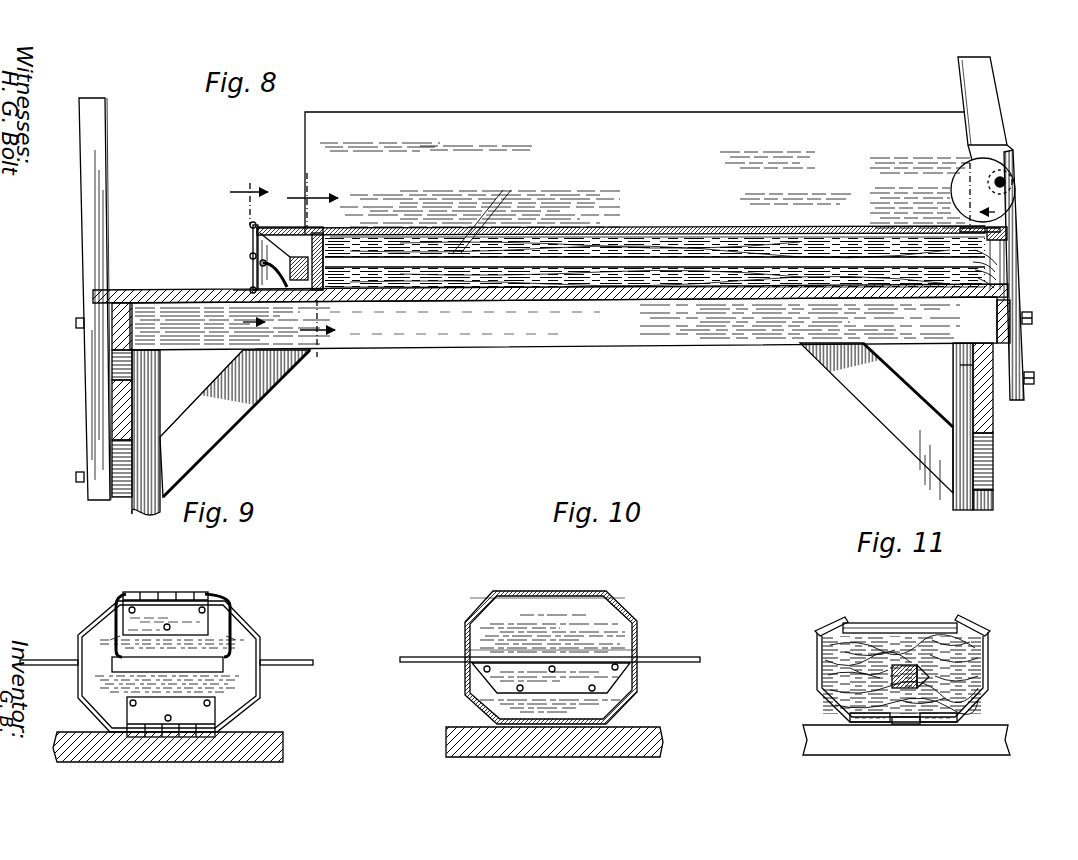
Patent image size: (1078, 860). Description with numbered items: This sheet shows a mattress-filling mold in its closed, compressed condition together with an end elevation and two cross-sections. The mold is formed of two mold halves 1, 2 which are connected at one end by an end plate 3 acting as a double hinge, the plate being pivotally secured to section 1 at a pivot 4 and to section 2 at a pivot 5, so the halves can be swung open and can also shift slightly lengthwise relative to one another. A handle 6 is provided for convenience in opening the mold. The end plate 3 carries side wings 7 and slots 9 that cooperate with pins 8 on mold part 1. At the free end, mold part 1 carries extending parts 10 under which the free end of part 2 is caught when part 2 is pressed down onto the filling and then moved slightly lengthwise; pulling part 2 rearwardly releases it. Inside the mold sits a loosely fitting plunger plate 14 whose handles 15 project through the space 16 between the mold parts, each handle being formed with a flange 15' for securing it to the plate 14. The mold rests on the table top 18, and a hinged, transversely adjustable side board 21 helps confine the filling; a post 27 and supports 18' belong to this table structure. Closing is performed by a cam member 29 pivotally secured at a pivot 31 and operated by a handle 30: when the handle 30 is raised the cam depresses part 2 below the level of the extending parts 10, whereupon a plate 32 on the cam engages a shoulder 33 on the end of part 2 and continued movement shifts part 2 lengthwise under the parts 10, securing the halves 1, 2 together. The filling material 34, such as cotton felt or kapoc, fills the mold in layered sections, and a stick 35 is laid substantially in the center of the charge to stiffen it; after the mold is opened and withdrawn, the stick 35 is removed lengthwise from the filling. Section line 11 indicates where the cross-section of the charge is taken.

In FIG. 8, the mold half 1 is at (616, 238).
In FIG. 9, the mold half 1 is at (82, 700).
In FIG. 10, the mold half 1 is at (465, 680).
In FIG. 11, the mold half 1 is at (900, 720).
In FIG. 8, the mold half 2 is at (625, 232).
In FIG. 9, the mold half 2 is at (240, 612).
In FIG. 10, the mold half 2 is at (483, 607).
In FIG. 11, the mold half 2 is at (890, 622).
In FIG. 9, the end plate 3 is at (220, 733).
In FIG. 8, the pivot 4 is at (240, 293).
In FIG. 9, the pivot 4 is at (167, 737).
In FIG. 8, the pivot 5 is at (253, 227).
In FIG. 9, the pivot 5 is at (210, 597).
In FIG. 8, the handle 6 is at (252, 258).
In FIG. 9, the handle 6 is at (127, 673).
In FIG. 8, the side wings 7 is at (268, 233).
In FIG. 8, the pins 8 is at (250, 268).
In FIG. 8, the slots 9 is at (238, 275).
In FIG. 8, the extending parts 10 is at (312, 272).
In FIG. 11, the extending parts 10 is at (970, 620).
In FIG. 8, the section line 11 is at (977, 270).
In FIG. 8, the plunger plate 14 is at (327, 230).
In FIG. 10, the plunger plate 14 is at (603, 623).
In FIG. 9, the handles 15 is at (166, 642).
In FIG. 10, the handles 15 is at (550, 634).
In FIG. 8, the flange 15' is at (225, 372).
In FIG. 10, the flange 15' is at (578, 680).
In FIG. 10, the space 16 is at (462, 655).
In FIG. 8, the table top 18 is at (550, 268).
In FIG. 9, the table top 18 is at (174, 726).
In FIG. 10, the table top 18 is at (535, 727).
In FIG. 11, the table top 18 is at (884, 745).
In FIG. 11, the support blocks 18' is at (911, 750).
In FIG. 8, the side board 21 is at (750, 112).
In FIG. 8, the post 27 is at (97, 187).
In FIG. 8, the cam member 29 is at (955, 183).
In FIG. 8, the operating handle 30 is at (993, 108).
In FIG. 8, the pivot 31 is at (1008, 180).
In FIG. 8, the plate 32 is at (975, 228).
In FIG. 8, the shoulder 33 is at (1007, 233).
In FIG. 8, the filling material 34 is at (523, 270).
In FIG. 11, the filling material 34 is at (985, 680).
In FIG. 8, the stick 35 is at (737, 262).
In FIG. 11, the stick 35 is at (835, 705).